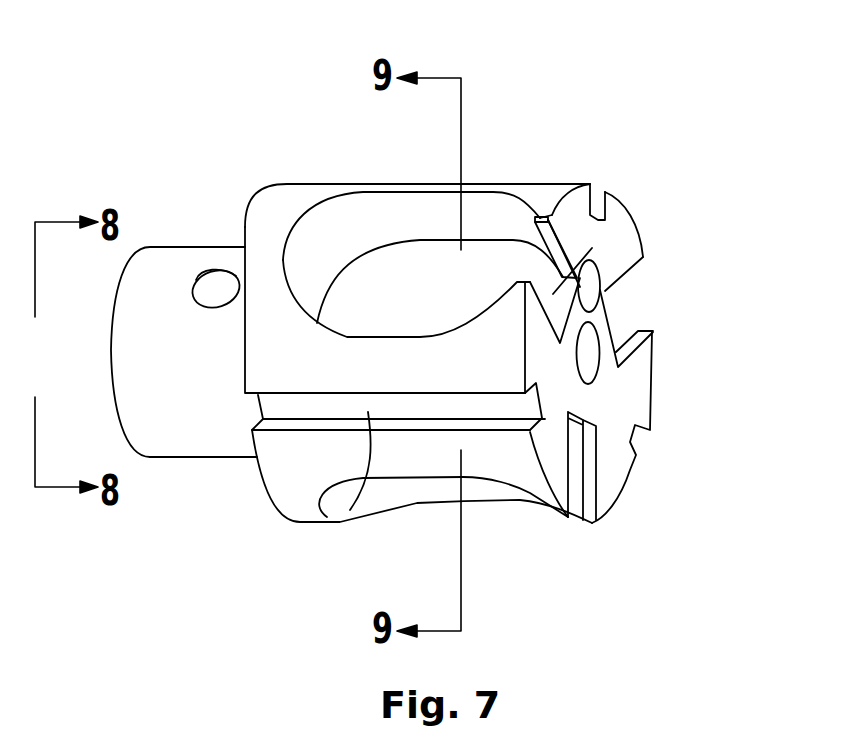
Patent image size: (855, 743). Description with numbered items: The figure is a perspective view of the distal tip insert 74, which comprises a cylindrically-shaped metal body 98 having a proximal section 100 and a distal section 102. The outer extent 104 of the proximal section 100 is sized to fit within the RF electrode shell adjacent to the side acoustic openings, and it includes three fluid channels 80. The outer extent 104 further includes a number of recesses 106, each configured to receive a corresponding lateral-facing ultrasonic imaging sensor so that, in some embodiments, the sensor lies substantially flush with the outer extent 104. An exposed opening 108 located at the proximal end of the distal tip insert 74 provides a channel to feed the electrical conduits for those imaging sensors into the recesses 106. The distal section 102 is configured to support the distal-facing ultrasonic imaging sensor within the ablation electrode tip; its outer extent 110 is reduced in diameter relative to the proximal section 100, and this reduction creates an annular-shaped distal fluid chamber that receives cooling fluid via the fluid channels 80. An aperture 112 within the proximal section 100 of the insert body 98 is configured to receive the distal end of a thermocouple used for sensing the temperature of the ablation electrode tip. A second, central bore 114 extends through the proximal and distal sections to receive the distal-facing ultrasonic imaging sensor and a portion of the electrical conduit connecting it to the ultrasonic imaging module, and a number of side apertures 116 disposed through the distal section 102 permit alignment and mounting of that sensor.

The distal tip insert 74 is at (510, 74).
The fluid channels 80 is at (596, 204).
The cylindrically-shaped metal body 98 is at (290, 483).
The proximal section 100 is at (530, 498).
The distal section 102 is at (185, 452).
The outer extent of the proximal section 104 is at (618, 487).
The recesses 106 is at (402, 250).
The exposed opening 108 is at (612, 240).
The outer extent of the distal section 110 is at (160, 257).
The aperture 112 is at (594, 283).
The central bore 114 is at (592, 357).
The side apertures 116 is at (215, 288).